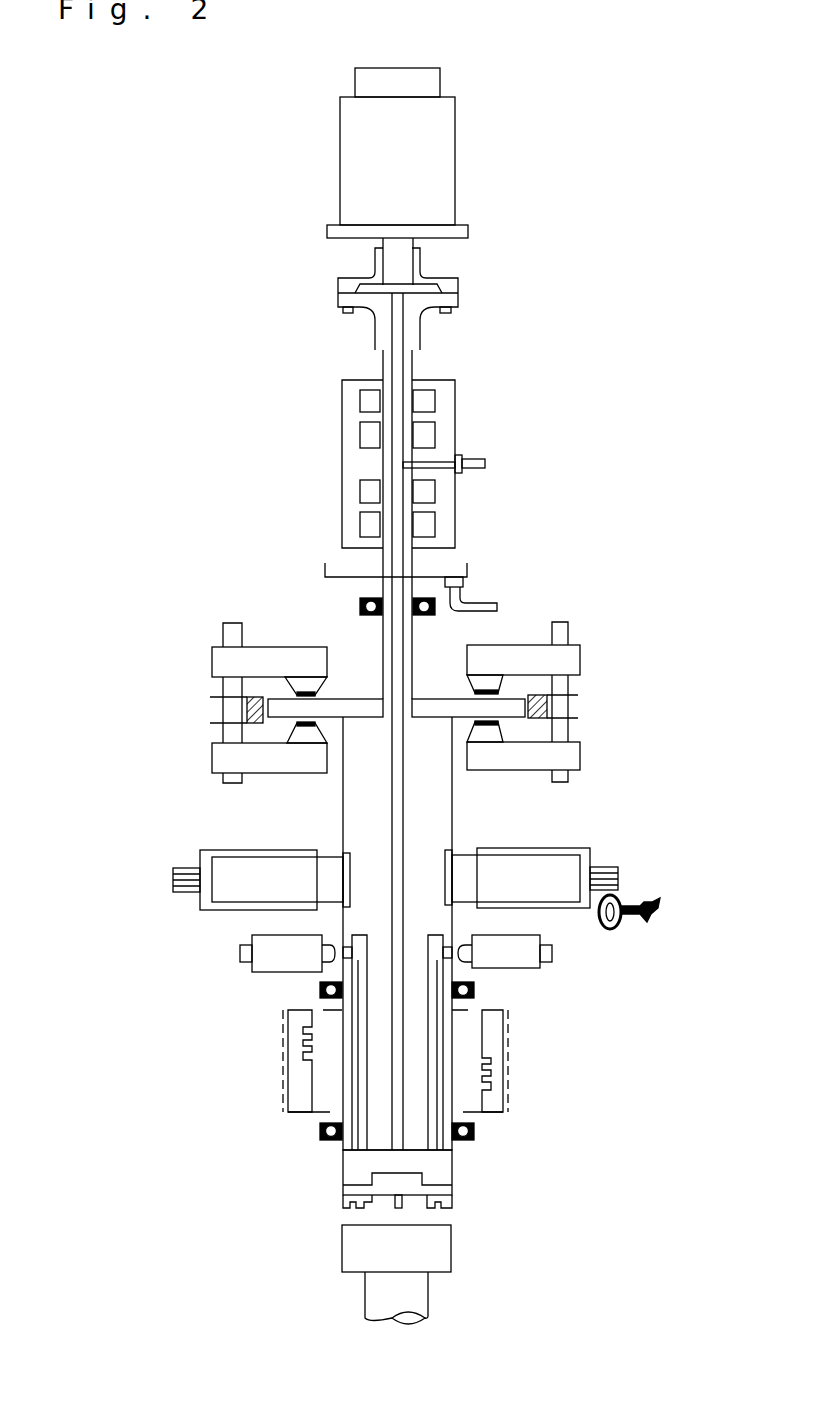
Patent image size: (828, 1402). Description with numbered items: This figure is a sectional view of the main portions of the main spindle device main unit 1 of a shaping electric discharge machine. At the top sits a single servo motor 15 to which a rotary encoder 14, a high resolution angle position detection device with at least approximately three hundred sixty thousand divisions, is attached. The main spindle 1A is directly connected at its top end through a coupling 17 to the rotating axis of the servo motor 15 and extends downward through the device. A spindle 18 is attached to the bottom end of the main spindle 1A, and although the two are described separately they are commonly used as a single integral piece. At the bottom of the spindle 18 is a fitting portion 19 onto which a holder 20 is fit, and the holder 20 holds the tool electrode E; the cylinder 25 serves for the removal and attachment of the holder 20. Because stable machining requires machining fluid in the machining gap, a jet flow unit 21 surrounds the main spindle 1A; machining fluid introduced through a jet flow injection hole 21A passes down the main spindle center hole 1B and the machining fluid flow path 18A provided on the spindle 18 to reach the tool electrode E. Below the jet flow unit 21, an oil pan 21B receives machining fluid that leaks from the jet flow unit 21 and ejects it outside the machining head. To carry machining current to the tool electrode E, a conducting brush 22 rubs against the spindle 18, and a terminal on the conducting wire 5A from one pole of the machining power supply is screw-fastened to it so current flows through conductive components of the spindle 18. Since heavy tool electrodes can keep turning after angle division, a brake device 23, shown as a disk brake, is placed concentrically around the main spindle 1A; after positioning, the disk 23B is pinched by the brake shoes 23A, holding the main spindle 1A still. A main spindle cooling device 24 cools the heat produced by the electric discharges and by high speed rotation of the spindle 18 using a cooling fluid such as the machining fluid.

The main spindle device main unit 1 is at (576, 427).
The main spindle 1A is at (383, 360).
The main spindle center hole 1B is at (398, 645).
The rotary encoder 14 is at (440, 82).
The servo motor 15 is at (455, 170).
The coupling 17 is at (458, 280).
The spindle 18 is at (445, 810).
The machining fluid flow path 18A is at (393, 1037).
The fitting portion 19 is at (452, 1190).
The holder 20 is at (448, 1248).
The jet flow unit 21 is at (452, 398).
The jet flow injection hole 21A is at (468, 472).
The oil pan 21B is at (467, 577).
The conducting brush 22 is at (238, 865).
The brake device 23 is at (592, 631).
The brake shoes 23A is at (303, 680).
The disk 23B is at (508, 707).
The main spindle cooling device 24 is at (500, 1053).
The cylinder 25 is at (530, 962).
The conducting wire 5A is at (650, 918).
The tool electrode E is at (428, 1303).